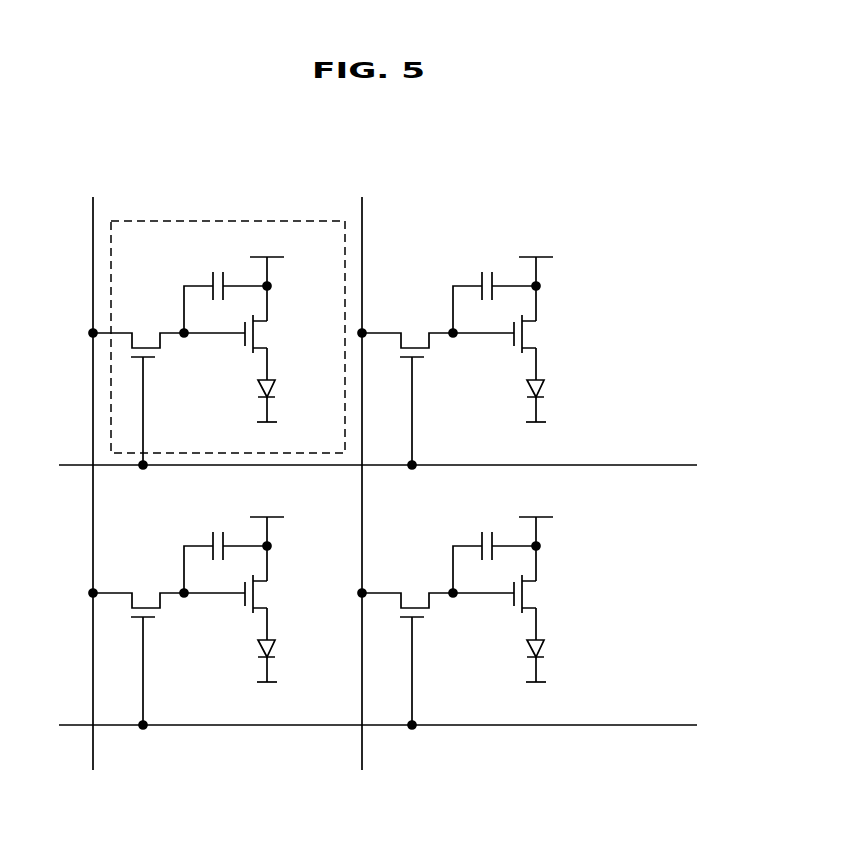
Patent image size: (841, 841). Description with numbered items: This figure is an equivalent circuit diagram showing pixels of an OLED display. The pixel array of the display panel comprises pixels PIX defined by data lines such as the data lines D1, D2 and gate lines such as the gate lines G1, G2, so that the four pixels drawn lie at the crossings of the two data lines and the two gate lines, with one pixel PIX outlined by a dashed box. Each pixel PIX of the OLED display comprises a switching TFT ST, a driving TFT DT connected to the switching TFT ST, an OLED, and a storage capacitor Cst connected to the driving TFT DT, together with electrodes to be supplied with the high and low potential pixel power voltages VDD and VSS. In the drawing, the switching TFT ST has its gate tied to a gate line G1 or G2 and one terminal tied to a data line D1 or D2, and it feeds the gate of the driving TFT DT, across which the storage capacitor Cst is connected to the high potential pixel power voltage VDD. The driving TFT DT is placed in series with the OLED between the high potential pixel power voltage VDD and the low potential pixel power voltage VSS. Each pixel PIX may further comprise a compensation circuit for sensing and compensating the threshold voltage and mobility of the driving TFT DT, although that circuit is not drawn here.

The data line D1 is at (91, 467).
The data line D2 is at (360, 467).
The gate line G1 is at (363, 465).
The gate line G2 is at (363, 725).
The pixel PIX is at (221, 221).
The switching TFT ST is at (273, 531).
The driving TFT DT is at (374, 463).
The storage capacitor Cst is at (360, 422).
The high potential pixel power voltage VDD is at (402, 388).
The low potential pixel power voltage VSS is at (402, 567).
The element OLED is at (430, 529).